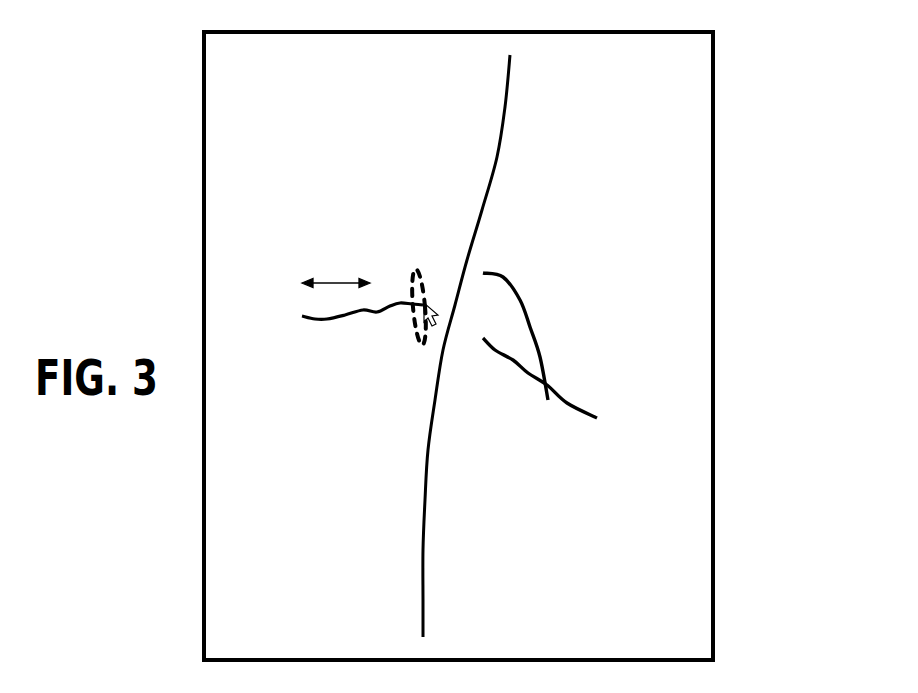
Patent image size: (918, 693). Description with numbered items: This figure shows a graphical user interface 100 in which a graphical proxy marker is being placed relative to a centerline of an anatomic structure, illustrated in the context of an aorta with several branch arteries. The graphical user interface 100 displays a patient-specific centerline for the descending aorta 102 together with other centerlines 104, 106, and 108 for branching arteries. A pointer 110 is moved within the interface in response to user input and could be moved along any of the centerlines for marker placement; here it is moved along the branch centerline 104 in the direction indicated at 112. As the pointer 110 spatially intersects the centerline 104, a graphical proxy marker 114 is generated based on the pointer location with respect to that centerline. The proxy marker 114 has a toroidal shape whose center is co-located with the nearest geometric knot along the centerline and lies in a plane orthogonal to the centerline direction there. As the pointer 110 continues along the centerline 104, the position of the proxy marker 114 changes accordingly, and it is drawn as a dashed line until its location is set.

The graphical user interface 100 is at (732, 150).
The centerline of descending aorta 102 is at (498, 157).
The branch centerline 104 is at (347, 319).
The branch centerline 106 is at (528, 320).
The branch centerline 108 is at (575, 403).
The pointer 110 is at (423, 347).
The direction of pointer movement 112 is at (333, 282).
The graphical proxy marker 114 is at (417, 268).